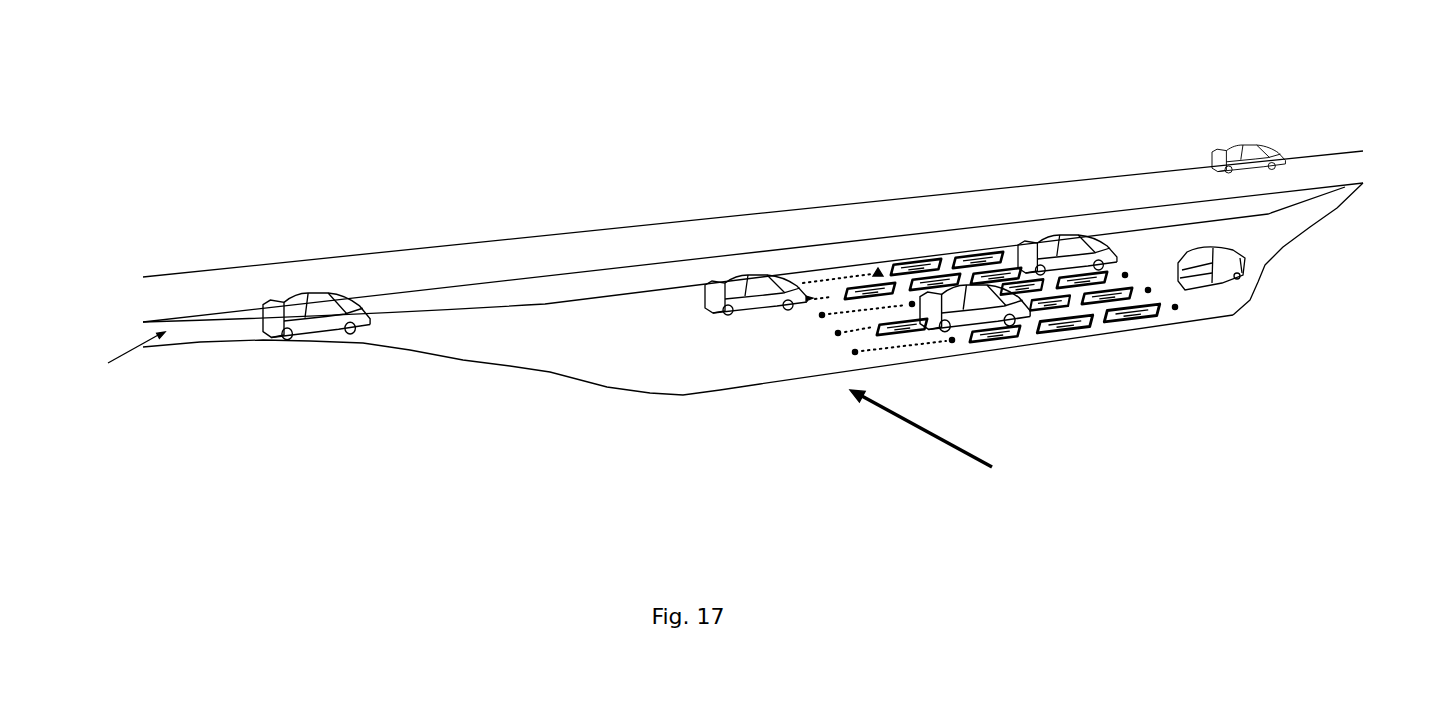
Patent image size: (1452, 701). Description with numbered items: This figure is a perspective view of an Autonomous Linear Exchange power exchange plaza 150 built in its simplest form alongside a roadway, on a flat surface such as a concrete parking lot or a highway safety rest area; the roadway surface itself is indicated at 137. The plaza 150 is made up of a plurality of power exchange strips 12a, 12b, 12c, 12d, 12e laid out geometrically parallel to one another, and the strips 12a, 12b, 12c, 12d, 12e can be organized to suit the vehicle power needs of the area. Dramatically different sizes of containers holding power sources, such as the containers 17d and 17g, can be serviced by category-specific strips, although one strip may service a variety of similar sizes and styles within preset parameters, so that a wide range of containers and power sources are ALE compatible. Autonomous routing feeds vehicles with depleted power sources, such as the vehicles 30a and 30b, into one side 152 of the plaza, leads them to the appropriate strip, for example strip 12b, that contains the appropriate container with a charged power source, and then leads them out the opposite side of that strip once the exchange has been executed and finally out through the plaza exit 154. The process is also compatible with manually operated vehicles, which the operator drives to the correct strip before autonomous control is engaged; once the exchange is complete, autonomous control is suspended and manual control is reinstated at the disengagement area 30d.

The power exchange strip 12a is at (902, 350).
The power exchange strip 12b is at (1149, 288).
The power exchange strip 12c is at (1125, 273).
The power exchange strip 12d is at (825, 300).
The power exchange strip 12e is at (867, 272).
The container 17d is at (1077, 330).
The container 17g is at (1005, 250).
The vehicle 30a is at (353, 312).
The vehicle 30b is at (768, 278).
The vehicle / disengagement area 30d is at (1228, 277).
The roadway 137 is at (587, 333).
The power exchange plaza 150 is at (947, 438).
The plaza entry side 152 is at (122, 361).
The plaza exit 154 is at (1333, 207).